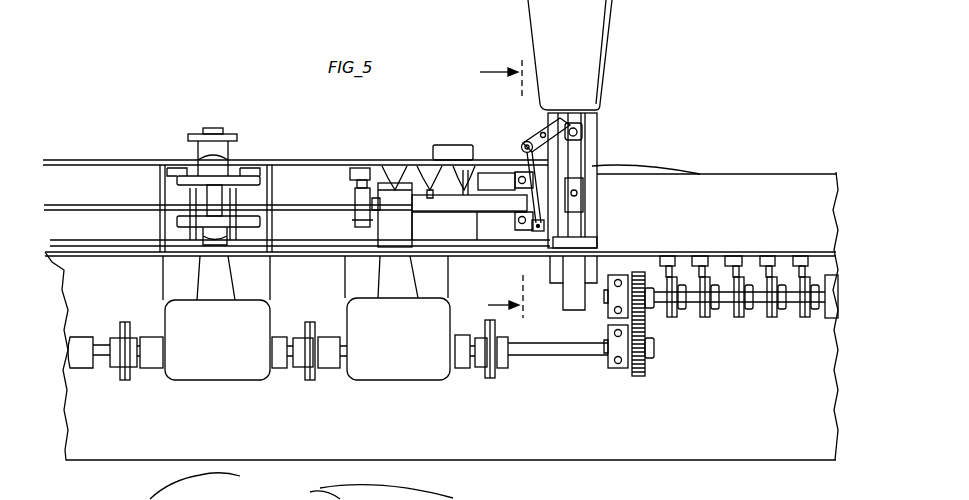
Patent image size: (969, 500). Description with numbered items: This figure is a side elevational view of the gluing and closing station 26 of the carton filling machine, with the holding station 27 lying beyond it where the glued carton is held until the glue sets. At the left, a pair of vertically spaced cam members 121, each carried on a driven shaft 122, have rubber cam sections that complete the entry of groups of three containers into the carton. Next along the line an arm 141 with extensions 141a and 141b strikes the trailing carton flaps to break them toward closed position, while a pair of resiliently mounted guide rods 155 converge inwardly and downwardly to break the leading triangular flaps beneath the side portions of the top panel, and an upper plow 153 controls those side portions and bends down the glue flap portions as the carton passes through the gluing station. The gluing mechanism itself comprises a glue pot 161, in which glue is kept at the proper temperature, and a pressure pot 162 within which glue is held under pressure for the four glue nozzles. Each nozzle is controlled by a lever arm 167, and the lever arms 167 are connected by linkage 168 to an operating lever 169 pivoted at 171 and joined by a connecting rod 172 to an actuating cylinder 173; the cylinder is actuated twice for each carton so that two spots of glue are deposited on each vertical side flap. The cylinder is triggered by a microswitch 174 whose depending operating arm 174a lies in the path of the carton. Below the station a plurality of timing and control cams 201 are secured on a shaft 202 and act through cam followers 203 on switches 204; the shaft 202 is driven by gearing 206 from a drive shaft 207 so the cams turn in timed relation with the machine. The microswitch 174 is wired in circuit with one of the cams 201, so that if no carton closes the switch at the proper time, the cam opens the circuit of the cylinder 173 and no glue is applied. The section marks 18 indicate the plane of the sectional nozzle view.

The gluing and closing station 26 is at (460, 425).
The holding station 27 is at (712, 418).
The section line 18- 18 is at (487, 189).
The cam member 121 is at (177, 181).
The shaft 122 is at (222, 128).
The arm 141 is at (387, 212).
The extension of arm 141a is at (350, 173).
The extension of arm 141b is at (357, 187).
The upper plow 153 is at (612, 170).
The guide rod 155 is at (495, 170).
The glue pot 161 is at (595, 41).
The pressure pot 162 is at (590, 146).
The lever arm 167 is at (530, 232).
The linkage 168 is at (520, 203).
The operating lever 169 is at (540, 140).
The pivot 171 is at (566, 125).
The connecting rod 172 is at (582, 168).
The actuating cylinder 173 is at (573, 285).
The microswitch 174 is at (452, 145).
The operating arm 174a is at (500, 135).
The timing and control cam 201 is at (738, 316).
The shaft 202 is at (655, 308).
The cam follower 203 is at (676, 280).
The switch 204 is at (668, 254).
The gearing 206 is at (637, 378).
The drive shaft 207 is at (553, 350).